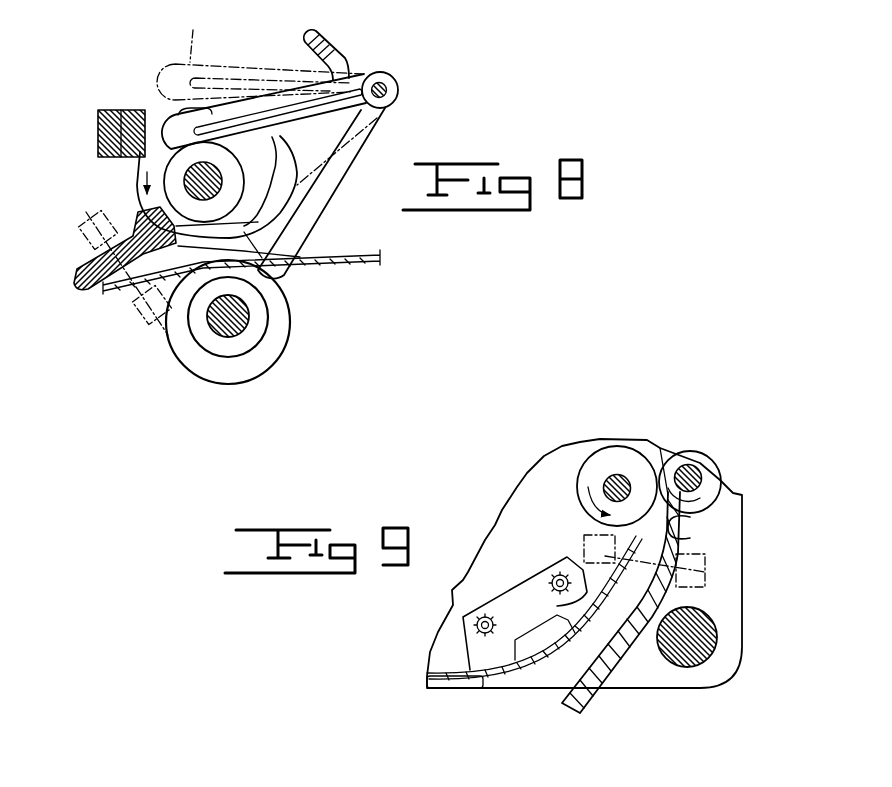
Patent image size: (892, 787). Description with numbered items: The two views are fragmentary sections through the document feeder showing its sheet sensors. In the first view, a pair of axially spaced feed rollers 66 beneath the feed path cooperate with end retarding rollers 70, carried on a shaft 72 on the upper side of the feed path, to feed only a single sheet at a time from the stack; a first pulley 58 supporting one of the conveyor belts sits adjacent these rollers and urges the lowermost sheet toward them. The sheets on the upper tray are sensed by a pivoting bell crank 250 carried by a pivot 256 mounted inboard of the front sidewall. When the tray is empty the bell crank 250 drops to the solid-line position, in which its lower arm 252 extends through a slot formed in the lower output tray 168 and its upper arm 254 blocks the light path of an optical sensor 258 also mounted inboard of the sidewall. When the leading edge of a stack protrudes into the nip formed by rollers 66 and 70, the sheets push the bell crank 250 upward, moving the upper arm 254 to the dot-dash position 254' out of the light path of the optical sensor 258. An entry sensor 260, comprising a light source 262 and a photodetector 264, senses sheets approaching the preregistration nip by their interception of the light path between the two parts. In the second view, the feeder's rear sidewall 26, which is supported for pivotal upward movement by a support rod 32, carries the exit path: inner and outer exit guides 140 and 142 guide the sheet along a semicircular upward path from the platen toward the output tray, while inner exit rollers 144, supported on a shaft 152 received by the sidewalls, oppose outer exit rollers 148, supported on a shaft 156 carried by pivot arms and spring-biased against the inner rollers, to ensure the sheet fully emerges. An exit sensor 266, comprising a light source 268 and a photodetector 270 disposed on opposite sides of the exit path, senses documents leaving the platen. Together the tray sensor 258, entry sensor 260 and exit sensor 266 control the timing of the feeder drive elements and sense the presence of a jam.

In FIG. 9, the rear sidewall 26 is at (530, 468).
In FIG. 9, the support rod 32 is at (692, 668).
In FIG. 8, the first pulley 58 is at (228, 338).
In FIG. 8, the feed rollers 66 is at (300, 345).
In FIG. 8, the end retarding rollers 70 is at (145, 187).
In FIG. 8, the shaft 72 is at (135, 170).
In FIG. 9, the inner exit guide 140 is at (480, 688).
In FIG. 9, the outer exit guide 142 is at (583, 713).
In FIG. 9, the inner exit rollers 144 is at (607, 448).
In FIG. 9, the outer exit rollers 148 is at (683, 457).
In FIG. 9, the shaft 152 is at (614, 474).
In FIG. 9, the shaft 156 is at (703, 465).
In FIG. 8, the output tray 168 is at (377, 266).
In FIG. 8, the bell crank 250 is at (367, 157).
In FIG. 8, the lower arm 252 is at (305, 236).
In FIG. 8, the upper arm 254 is at (259, 55).
In FIG. 8, the upper arm position 254' is at (179, 31).
In FIG. 8, the pivot 256 is at (388, 84).
In FIG. 8, the optical sensor 258 is at (160, 112).
In FIG. 8, the entry sensor 260 is at (145, 336).
In FIG. 8, the light source 262 is at (84, 213).
In FIG. 8, the photodetector 264 is at (143, 322).
In FIG. 9, the exit sensor 266 is at (583, 543).
In FIG. 9, the light source 268 is at (707, 568).
In FIG. 9, the photodetector 270 is at (578, 594).